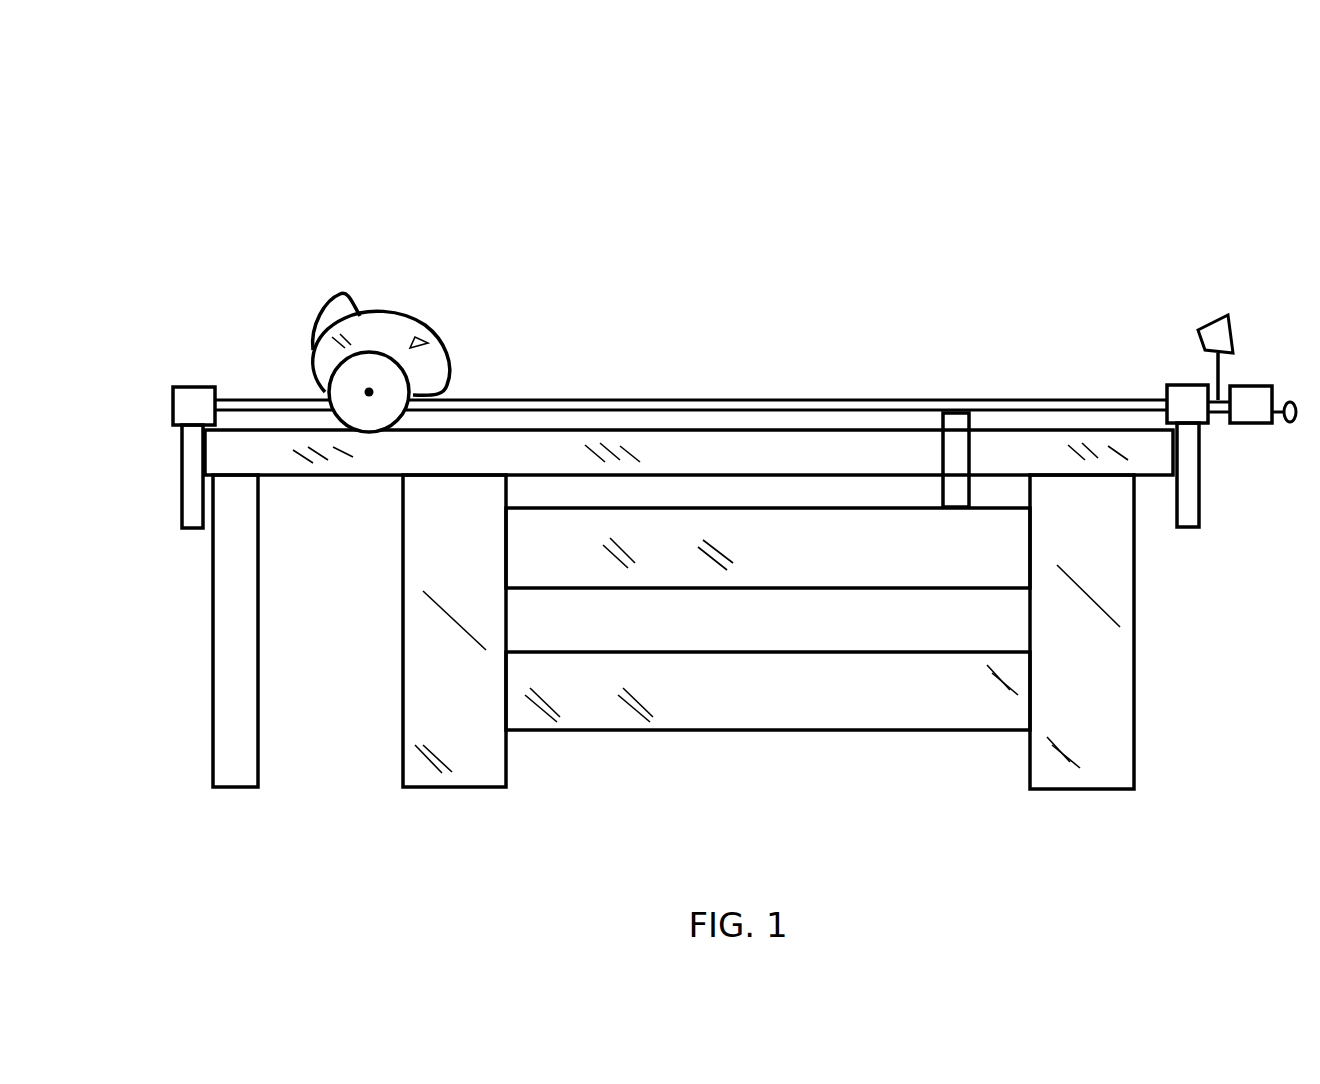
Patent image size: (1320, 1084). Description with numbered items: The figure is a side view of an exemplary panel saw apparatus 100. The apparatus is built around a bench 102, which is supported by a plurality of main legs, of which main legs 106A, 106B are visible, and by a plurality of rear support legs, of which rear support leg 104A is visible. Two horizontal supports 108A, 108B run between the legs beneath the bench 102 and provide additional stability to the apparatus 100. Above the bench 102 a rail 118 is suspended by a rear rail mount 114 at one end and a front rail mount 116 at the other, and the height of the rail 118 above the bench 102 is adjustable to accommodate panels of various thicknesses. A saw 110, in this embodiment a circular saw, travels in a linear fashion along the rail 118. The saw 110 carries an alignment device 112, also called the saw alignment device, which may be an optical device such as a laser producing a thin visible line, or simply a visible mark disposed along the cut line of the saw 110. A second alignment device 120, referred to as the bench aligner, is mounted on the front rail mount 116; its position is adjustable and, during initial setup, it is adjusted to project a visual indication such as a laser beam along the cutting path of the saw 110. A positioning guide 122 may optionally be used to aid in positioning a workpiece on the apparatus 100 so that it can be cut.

The panel saw apparatus 100 is at (626, 160).
The bench 102 is at (396, 462).
The rear support leg 104A is at (230, 733).
The main leg 106A is at (420, 718).
The main leg 106B is at (1107, 705).
The horizontal support 108A is at (868, 564).
The horizontal support 108B is at (873, 698).
The saw 110 is at (436, 335).
The alignment device 112 is at (430, 340).
The rear rail mount 114 is at (187, 392).
The front rail mount 116 is at (1261, 301).
The rail 118 is at (578, 398).
The second alignment device 120 is at (1213, 320).
The positioning guide 122 is at (960, 440).